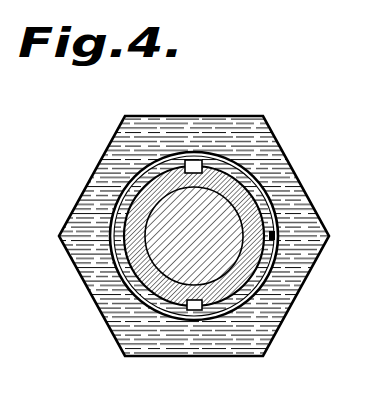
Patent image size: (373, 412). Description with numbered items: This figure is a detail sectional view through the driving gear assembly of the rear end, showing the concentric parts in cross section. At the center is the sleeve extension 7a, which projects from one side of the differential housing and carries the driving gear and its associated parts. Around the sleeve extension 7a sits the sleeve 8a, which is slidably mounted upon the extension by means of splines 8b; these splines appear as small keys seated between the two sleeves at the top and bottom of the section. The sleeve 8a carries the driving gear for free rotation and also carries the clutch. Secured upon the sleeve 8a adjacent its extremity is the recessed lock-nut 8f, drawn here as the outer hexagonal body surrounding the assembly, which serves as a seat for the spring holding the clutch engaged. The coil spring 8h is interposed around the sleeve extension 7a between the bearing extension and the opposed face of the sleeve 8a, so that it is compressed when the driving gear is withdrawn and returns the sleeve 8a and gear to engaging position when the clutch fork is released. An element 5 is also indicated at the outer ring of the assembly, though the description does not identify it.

The outer sleeve 5 is at (125, 283).
The sleeve extension 7a is at (263, 278).
The sleeve 8a is at (257, 208).
The splines 8b is at (200, 160).
The recessed lock-nut 8f is at (272, 160).
The coil spring 8h is at (115, 222).